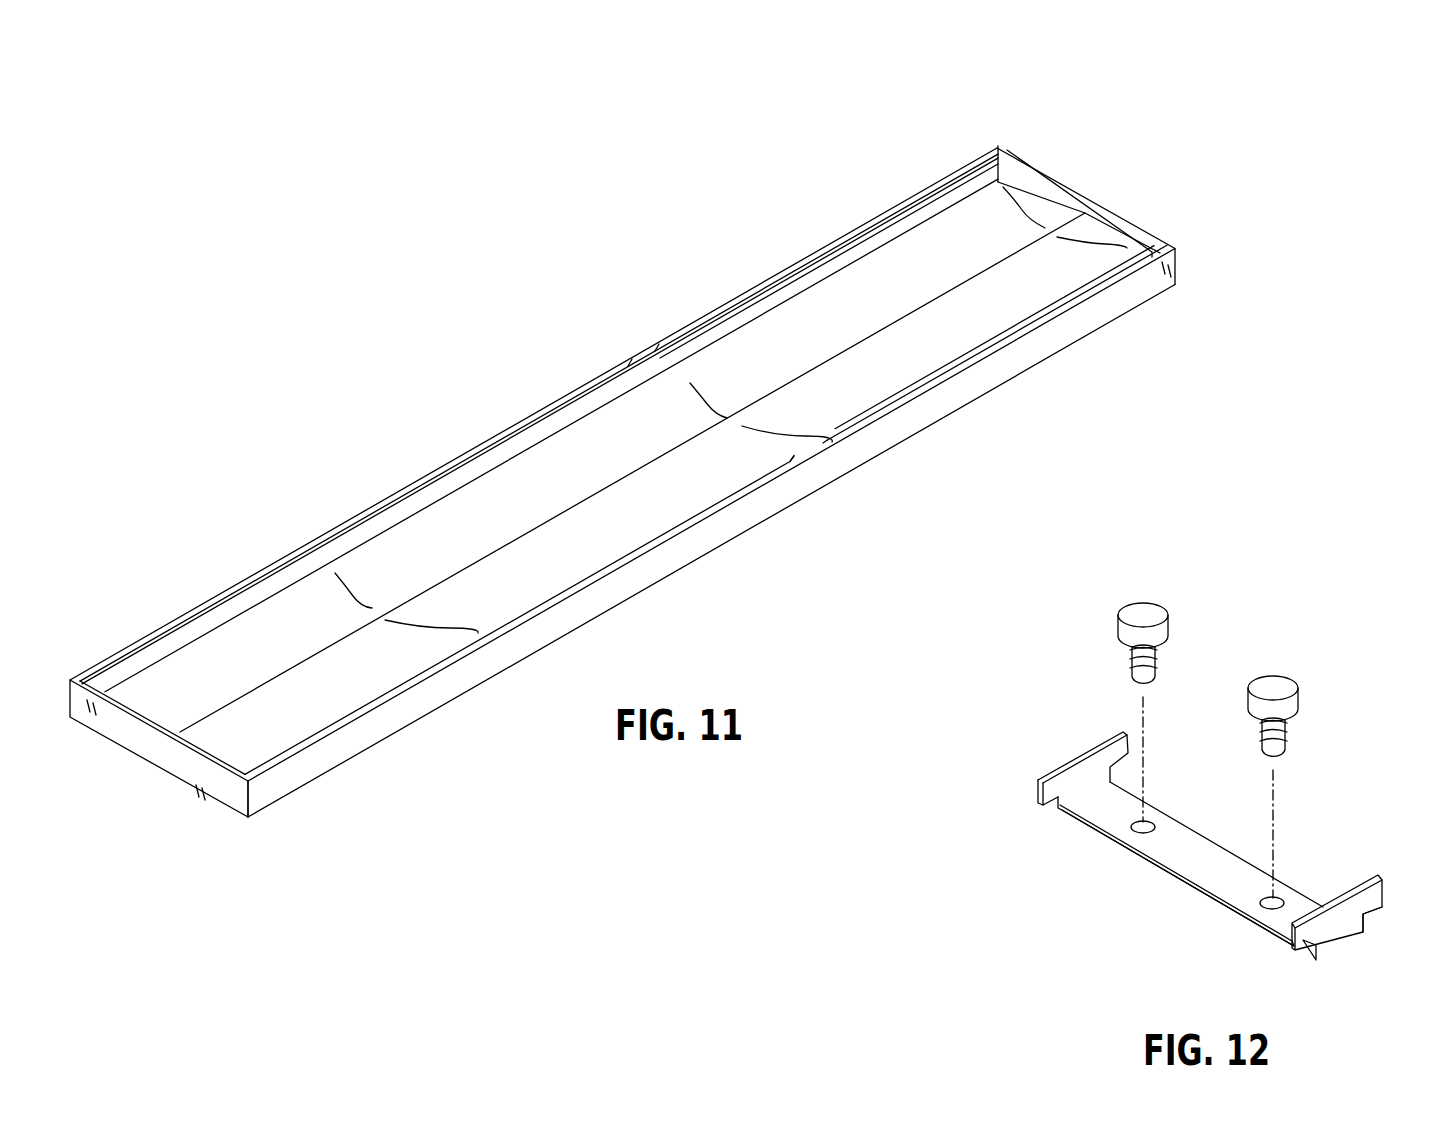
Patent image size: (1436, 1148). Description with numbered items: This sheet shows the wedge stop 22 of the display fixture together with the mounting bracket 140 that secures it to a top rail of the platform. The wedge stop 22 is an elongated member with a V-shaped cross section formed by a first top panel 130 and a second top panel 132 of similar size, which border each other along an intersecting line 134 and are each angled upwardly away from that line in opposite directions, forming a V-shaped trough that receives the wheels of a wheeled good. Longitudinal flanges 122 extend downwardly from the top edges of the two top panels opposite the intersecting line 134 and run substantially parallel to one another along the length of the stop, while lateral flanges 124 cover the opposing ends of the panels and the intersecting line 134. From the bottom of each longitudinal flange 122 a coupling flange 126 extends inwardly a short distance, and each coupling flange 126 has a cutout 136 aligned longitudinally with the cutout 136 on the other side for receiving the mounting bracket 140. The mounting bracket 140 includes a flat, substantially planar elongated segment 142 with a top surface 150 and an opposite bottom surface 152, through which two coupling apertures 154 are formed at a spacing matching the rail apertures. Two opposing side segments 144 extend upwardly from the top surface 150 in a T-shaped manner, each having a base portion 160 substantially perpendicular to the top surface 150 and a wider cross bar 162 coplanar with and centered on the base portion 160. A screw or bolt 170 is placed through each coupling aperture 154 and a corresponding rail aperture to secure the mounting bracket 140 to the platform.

In FIG. 11, the wedge stop 22 is at (172, 572).
In FIG. 11, the longitudinal flanges 122 is at (840, 258).
In FIG. 11, the lateral flanges 124 is at (1140, 238).
In FIG. 11, the coupling flanges 126 is at (703, 318).
In FIG. 11, the first top panel 130 is at (1048, 292).
In FIG. 11, the second top panel 132 is at (415, 545).
In FIG. 11, the intersecting line 134 is at (643, 470).
In FIG. 11, the cutout 136 is at (652, 347).
In FIG. 12, the mounting bracket 140 is at (1062, 846).
In FIG. 12, the elongated segment 142 is at (1200, 892).
In FIG. 12, the side segments 144 is at (1050, 792).
In FIG. 12, the top surface 150 is at (1125, 785).
In FIG. 12, the bottom surface 152 is at (1285, 940).
In FIG. 12, the coupling apertures 154 is at (1135, 833).
In FIG. 12, the base portion 160 is at (1306, 958).
In FIG. 12, the cross bar 162 is at (1388, 892).
In FIG. 12, the screw or bolt 170 is at (1147, 612).